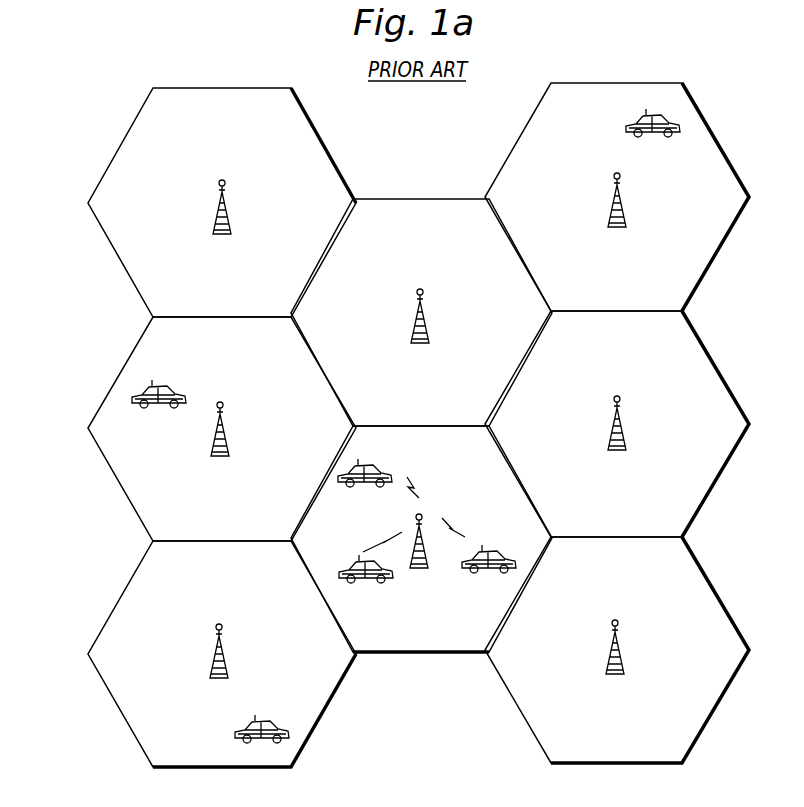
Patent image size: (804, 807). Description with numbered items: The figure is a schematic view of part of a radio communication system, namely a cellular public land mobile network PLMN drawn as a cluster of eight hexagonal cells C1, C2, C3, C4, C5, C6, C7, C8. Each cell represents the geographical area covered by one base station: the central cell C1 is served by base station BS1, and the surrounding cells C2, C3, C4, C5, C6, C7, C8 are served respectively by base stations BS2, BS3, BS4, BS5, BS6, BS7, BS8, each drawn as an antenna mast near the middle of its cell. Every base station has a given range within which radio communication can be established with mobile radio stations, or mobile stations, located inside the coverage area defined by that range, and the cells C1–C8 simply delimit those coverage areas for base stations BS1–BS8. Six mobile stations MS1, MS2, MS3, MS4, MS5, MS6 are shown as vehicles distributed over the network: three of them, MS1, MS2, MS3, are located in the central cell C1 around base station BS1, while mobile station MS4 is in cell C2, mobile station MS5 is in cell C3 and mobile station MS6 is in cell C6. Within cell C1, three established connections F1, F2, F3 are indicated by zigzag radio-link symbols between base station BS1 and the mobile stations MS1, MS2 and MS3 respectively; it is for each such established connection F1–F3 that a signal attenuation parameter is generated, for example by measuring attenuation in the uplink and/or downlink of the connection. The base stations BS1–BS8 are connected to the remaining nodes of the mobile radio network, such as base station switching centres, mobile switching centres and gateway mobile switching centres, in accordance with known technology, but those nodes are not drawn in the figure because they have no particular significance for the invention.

The public land mobile network PLMN is at (132, 73).
The cell C1 is at (376, 453).
The cell C2 is at (175, 572).
The cell C3 is at (176, 347).
The cell C4 is at (177, 119).
The cell C5 is at (375, 232).
The cell C6 is at (574, 113).
The cell C7 is at (574, 343).
The cell C8 is at (573, 567).
The base station BS1 is at (419, 568).
The base station BS2 is at (219, 678).
The base station BS3 is at (220, 456).
The base station BS4 is at (222, 234).
The base station BS5 is at (420, 343).
The base station BS6 is at (617, 227).
The base station BS7 is at (617, 450).
The base station BS8 is at (615, 674).
The mobile station MS1 is at (366, 583).
The mobile station MS2 is at (365, 487).
The mobile station MS3 is at (489, 573).
The mobile station MS4 is at (264, 714).
The mobile station MS5 is at (159, 408).
The mobile station MS6 is at (653, 137).
The established connection F1 is at (382, 542).
The established connection F2 is at (412, 486).
The established connection F3 is at (456, 524).